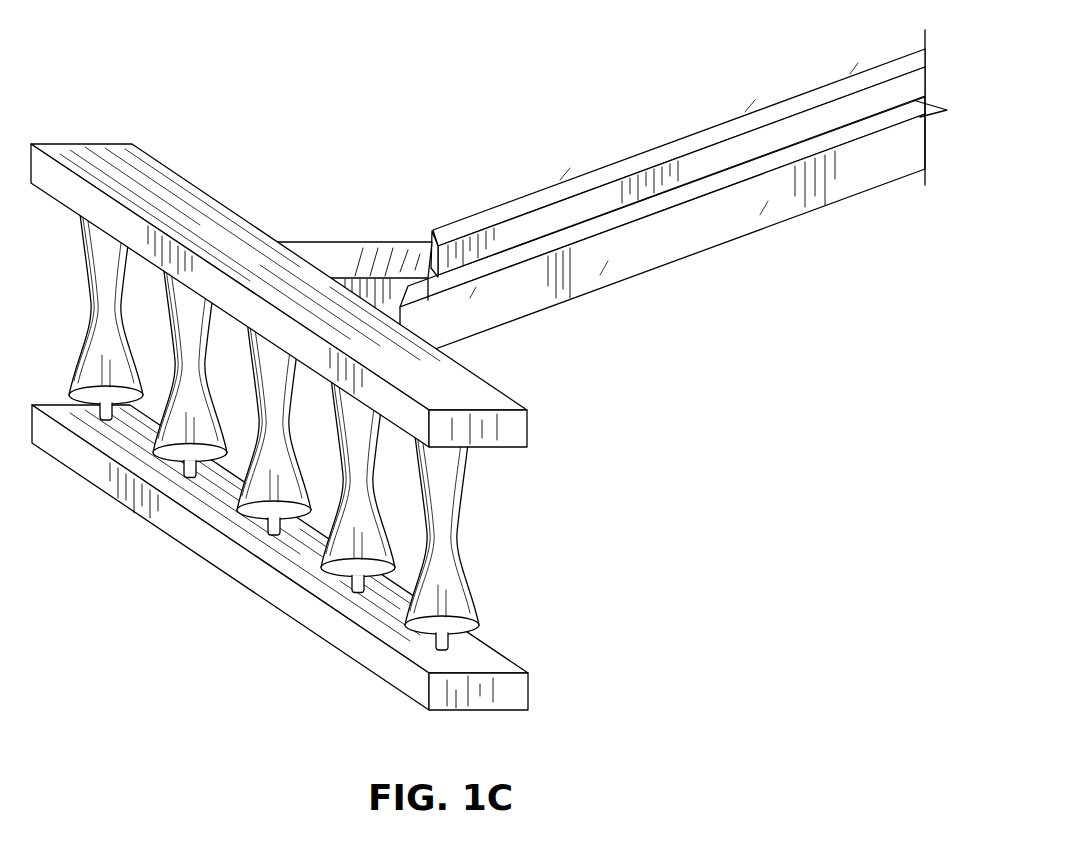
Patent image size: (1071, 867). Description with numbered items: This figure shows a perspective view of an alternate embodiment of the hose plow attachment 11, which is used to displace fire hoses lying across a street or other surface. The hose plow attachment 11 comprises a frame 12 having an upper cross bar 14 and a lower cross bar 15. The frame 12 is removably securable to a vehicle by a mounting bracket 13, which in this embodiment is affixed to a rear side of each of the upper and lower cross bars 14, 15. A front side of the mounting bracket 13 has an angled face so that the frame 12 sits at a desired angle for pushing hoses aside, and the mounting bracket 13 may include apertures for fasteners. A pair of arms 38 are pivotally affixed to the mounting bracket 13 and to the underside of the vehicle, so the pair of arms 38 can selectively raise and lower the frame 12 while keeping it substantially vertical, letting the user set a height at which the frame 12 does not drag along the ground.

The hose plow attachment 11 is at (673, 187).
The frame 12 is at (489, 361).
The mounting bracket 13 is at (373, 257).
The upper cross bar 14 is at (513, 427).
The lower cross bar 15 is at (515, 691).
The pair of arms 38 is at (762, 163).